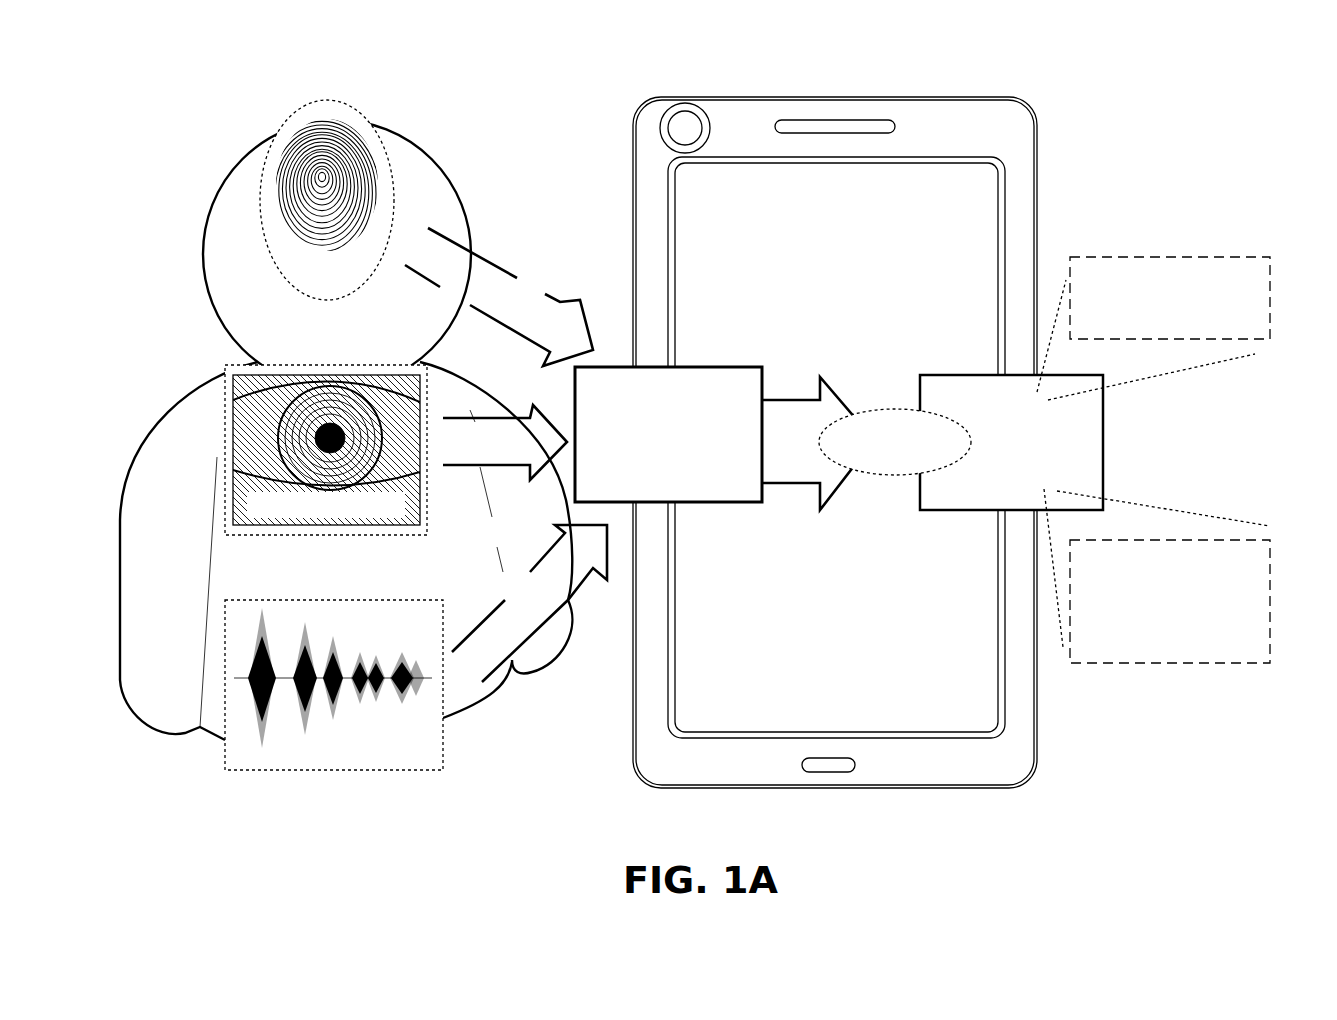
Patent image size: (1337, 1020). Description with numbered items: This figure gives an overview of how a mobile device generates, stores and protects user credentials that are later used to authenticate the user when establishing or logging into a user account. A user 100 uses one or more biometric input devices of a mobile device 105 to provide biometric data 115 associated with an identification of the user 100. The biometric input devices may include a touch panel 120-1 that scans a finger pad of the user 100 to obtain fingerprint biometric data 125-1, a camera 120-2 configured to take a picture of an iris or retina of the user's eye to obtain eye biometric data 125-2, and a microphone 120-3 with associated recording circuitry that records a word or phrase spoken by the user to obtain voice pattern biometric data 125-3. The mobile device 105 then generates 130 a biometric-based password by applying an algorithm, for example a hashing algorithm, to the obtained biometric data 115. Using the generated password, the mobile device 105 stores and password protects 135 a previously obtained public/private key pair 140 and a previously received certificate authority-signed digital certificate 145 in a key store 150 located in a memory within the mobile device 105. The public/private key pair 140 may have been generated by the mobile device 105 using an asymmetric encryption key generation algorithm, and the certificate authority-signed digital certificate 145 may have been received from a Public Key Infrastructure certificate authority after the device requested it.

The user 100 is at (235, 178).
The mobile device 105 is at (840, 82).
The biometric data 115 is at (518, 222).
The touch panel 120-1 is at (918, 200).
The camera 120-2 is at (685, 82).
The microphone 120-3 is at (830, 800).
The fingerprint biometric data 125-1 is at (360, 292).
The eye biometric data 125-2 is at (427, 518).
The voice pattern biometric data 125-3 is at (443, 757).
The generating a biometric-based password 130 is at (690, 367).
The password protecting 135 is at (880, 409).
The public/private key pair 140 is at (1165, 257).
The certificate authority-signed digital certificate 145 is at (1165, 665).
The key store 150 is at (960, 375).